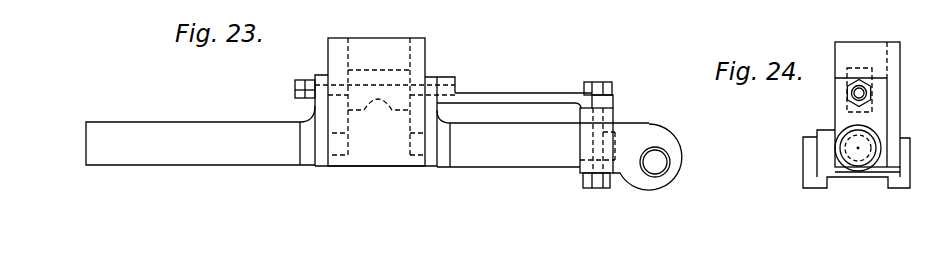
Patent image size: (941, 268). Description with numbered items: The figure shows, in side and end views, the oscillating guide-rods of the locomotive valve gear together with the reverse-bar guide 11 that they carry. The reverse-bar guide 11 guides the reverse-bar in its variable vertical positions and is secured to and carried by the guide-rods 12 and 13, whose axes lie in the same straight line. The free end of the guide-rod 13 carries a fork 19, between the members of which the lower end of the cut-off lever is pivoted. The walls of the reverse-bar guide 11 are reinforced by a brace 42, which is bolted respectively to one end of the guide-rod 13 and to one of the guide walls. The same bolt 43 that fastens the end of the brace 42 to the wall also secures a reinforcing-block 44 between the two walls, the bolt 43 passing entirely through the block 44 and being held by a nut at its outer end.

In FIG. 23, the reverse-bar guide 11 is at (375, 45).
In FIG. 24, the reverse-bar guide 11 is at (876, 45).
In FIG. 23, the guide-rod 12 is at (160, 128).
In FIG. 24, the guide-rod 12 is at (863, 167).
In FIG. 23, the guide-rod 13 is at (518, 123).
In FIG. 23, the fork 19 is at (634, 125).
In FIG. 24, the fork 19 is at (822, 188).
In FIG. 23, the brace 42 is at (497, 91).
In FIG. 23, the bolt 43 is at (295, 90).
In FIG. 24, the bolt 43 is at (847, 97).
In FIG. 23, the reinforcing-block 44 is at (387, 67).
In FIG. 24, the reinforcing-block 44 is at (848, 72).